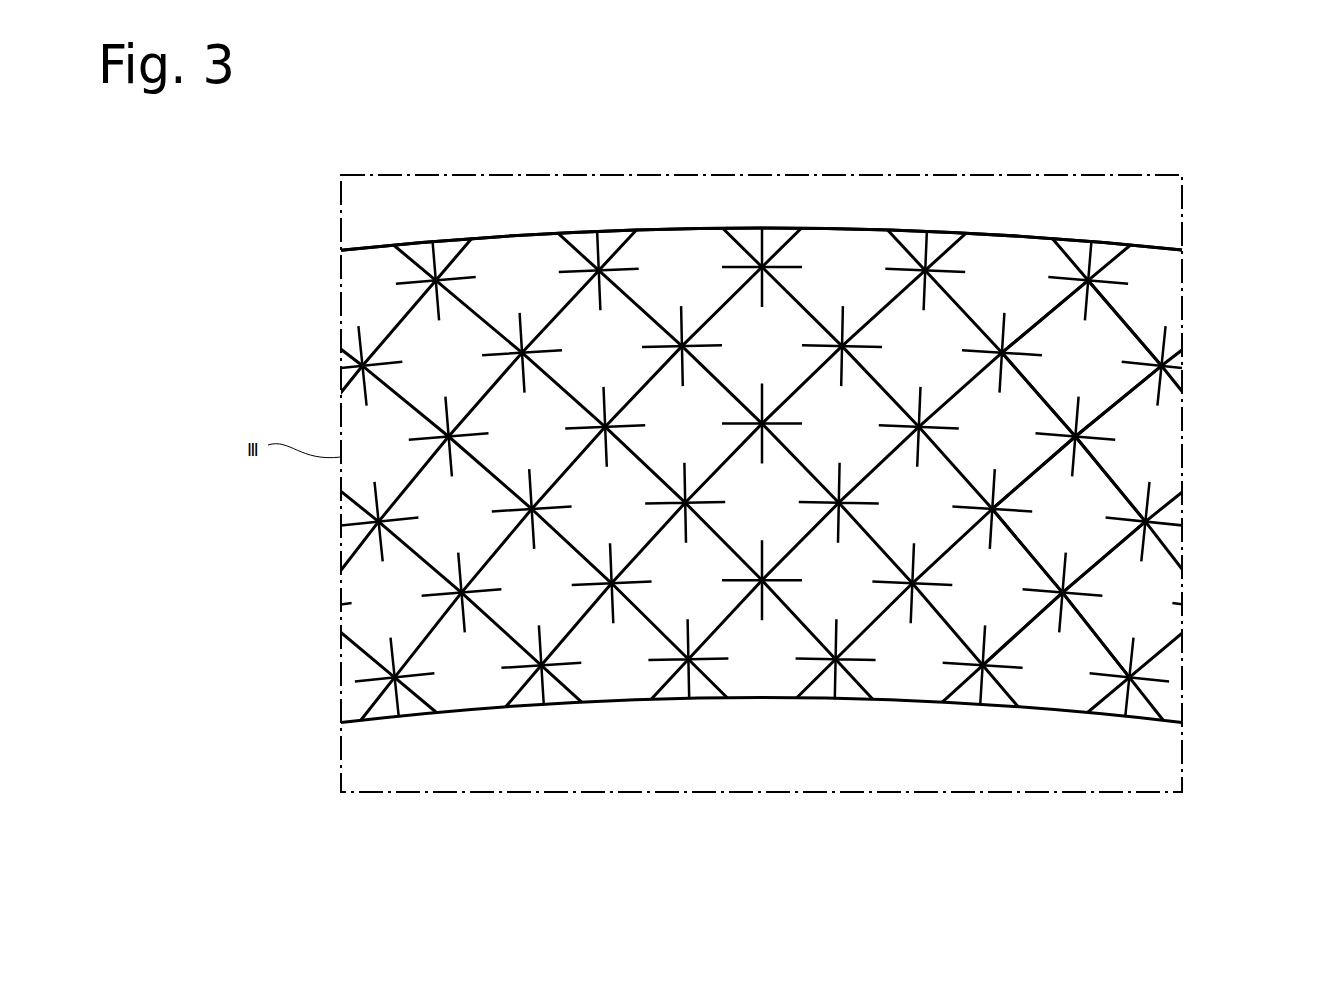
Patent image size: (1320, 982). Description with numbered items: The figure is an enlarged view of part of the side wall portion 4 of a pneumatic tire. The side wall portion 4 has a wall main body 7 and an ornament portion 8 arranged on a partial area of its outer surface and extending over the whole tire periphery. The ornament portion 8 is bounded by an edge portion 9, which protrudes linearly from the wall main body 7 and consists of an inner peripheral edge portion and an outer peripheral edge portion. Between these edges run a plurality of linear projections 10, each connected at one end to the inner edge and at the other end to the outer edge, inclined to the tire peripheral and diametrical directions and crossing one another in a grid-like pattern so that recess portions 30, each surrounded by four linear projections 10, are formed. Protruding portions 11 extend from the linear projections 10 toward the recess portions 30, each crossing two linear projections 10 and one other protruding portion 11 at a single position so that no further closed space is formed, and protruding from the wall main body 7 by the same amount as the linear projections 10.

The side wall portion 4 is at (1250, 156).
The wall main body 7 is at (677, 270).
The ornament portion 8 is at (1157, 248).
The edge portion 9 is at (838, 228).
The linear projection 10 is at (380, 693).
The protruding portion 11 is at (430, 262).
The recess portion 30 is at (1098, 333).